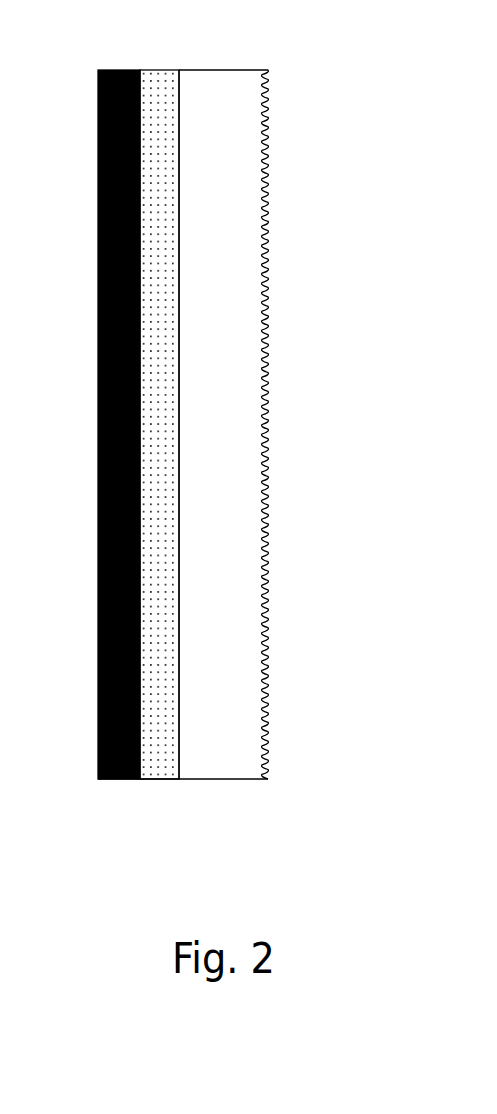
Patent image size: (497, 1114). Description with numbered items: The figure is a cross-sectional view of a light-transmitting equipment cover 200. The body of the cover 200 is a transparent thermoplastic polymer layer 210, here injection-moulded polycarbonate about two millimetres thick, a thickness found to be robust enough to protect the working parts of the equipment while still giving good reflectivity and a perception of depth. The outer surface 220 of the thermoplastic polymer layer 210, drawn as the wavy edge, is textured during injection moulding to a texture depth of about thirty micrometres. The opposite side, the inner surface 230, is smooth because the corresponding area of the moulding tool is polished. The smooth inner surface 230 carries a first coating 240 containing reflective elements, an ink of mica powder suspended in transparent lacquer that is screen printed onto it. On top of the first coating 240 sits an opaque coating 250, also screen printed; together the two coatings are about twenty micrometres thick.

The equipment cover 200 is at (217, 414).
The thermoplastic polymer layer 210 is at (258, 391).
The outer surface 220 is at (265, 202).
The inner surface 230 is at (179, 752).
The first coating 240 is at (157, 97).
The opaque coating 250 is at (126, 96).